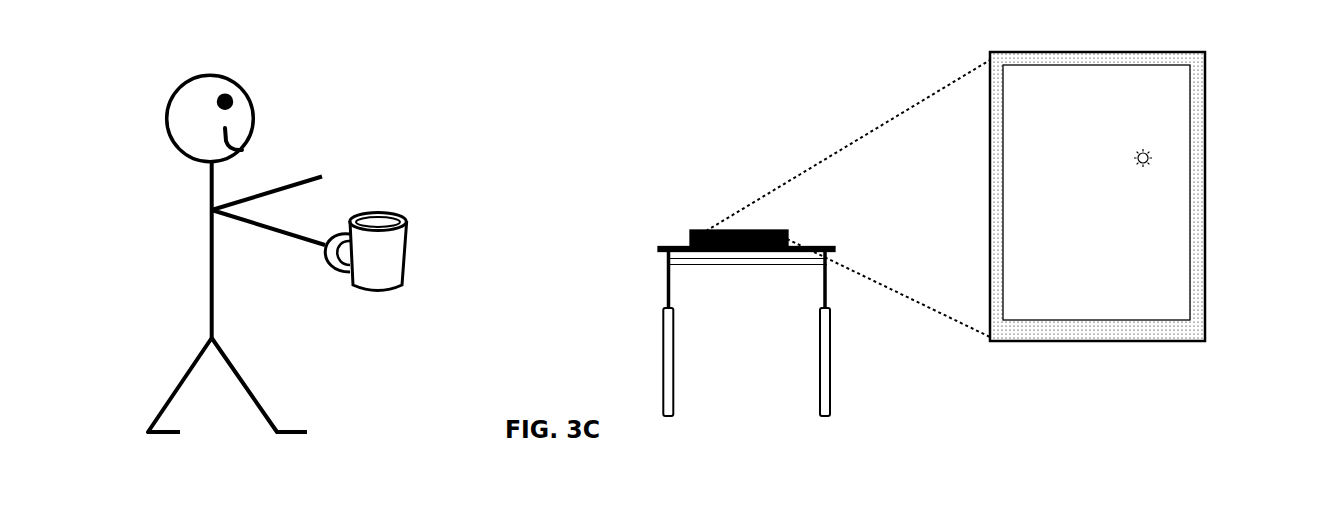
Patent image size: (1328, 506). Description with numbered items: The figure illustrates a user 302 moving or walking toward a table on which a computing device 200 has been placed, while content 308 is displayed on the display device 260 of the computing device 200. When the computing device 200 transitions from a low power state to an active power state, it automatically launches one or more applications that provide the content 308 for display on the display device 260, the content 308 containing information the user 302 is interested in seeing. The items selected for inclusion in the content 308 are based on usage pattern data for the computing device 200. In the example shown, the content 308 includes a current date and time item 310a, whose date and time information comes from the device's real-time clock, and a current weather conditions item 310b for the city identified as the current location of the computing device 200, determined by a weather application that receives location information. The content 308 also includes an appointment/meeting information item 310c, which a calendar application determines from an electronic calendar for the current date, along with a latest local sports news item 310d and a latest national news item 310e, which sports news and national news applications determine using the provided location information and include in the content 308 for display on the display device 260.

The user 302 is at (212, 257).
The computing device 200 is at (738, 230).
The content 308 is at (997, 52).
The display device 260 is at (1097, 52).
The current date and time item 310a is at (1170, 110).
The current weather conditions item 310b is at (1158, 157).
The appointment/meeting information item 310c is at (1165, 188).
The latest local sports news item 310d is at (1180, 220).
The latest national news item 310e is at (1157, 302).